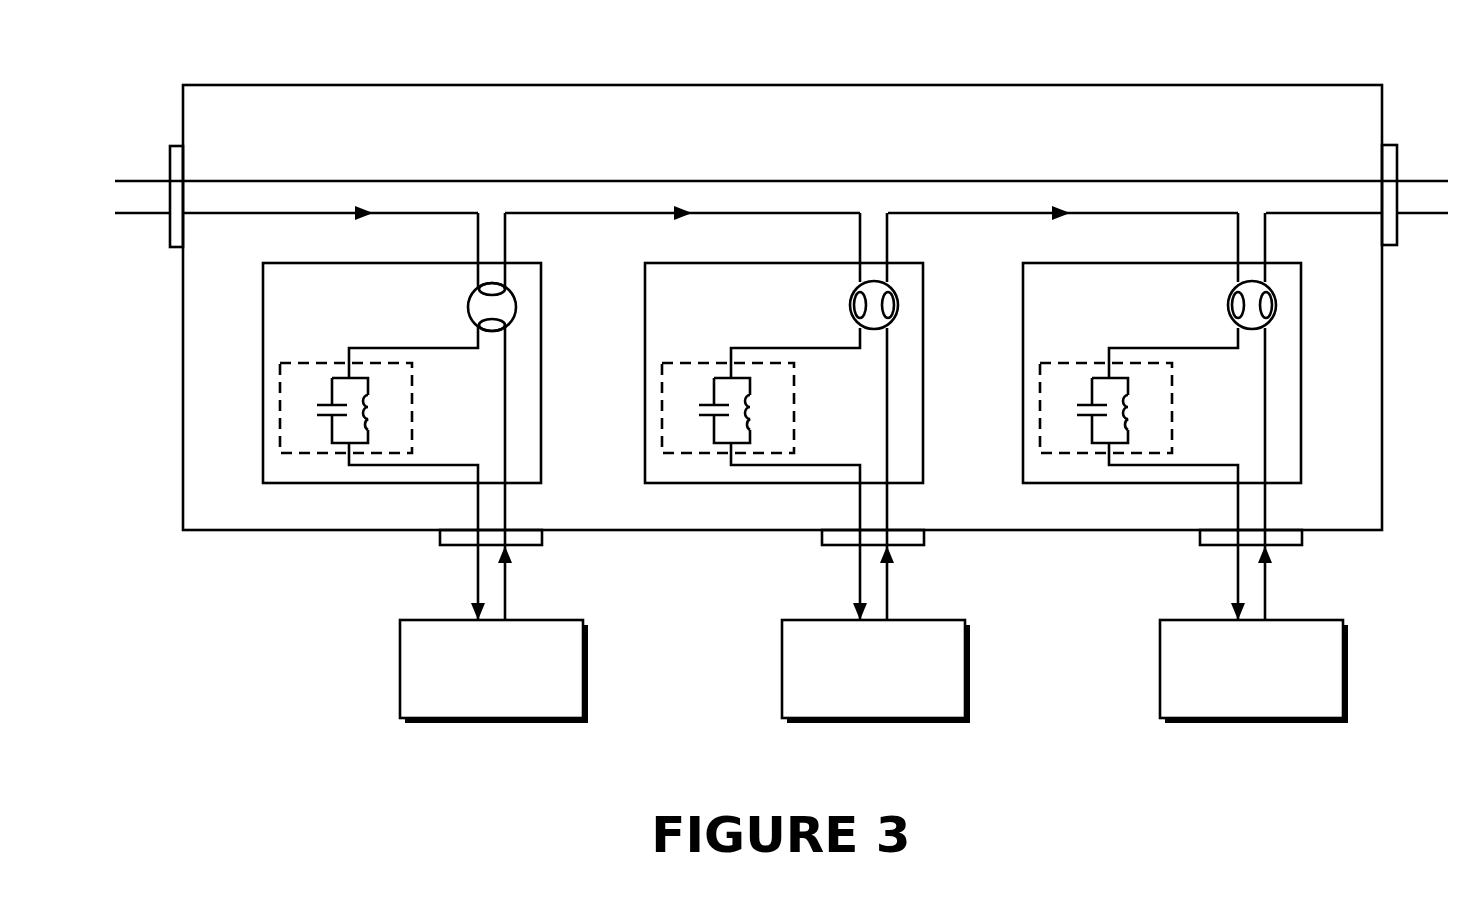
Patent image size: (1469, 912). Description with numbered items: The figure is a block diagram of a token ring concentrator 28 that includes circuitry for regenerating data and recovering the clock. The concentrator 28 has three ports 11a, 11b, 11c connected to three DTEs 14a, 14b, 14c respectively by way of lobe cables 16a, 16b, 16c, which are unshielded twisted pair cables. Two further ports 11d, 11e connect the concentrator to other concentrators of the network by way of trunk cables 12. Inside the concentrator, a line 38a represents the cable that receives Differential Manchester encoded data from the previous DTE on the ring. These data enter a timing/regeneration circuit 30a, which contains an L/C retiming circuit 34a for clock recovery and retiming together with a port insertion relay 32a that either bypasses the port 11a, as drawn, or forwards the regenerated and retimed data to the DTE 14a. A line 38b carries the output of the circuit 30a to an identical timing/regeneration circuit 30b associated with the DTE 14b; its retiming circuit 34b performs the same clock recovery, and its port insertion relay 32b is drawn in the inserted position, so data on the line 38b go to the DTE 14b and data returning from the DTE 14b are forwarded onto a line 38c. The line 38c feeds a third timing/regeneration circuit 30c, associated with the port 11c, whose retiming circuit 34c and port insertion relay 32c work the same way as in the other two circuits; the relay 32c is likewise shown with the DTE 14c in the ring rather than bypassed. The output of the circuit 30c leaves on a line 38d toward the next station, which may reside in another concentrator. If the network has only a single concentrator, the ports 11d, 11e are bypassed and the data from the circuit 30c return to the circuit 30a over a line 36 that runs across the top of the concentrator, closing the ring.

The concentrator 28 is at (1103, 85).
The line 36 is at (422, 181).
The trunk cables 12 is at (160, 181).
The port 11d is at (172, 248).
The port 11e is at (1393, 245).
The line 38a is at (267, 213).
The line 38b is at (617, 213).
The line 38c is at (990, 213).
The line 38d is at (1313, 213).
The timing/regeneration circuit 30a is at (263, 400).
The timing/regeneration circuit 30b is at (645, 378).
The timing/regeneration circuit 30c is at (1023, 355).
The port insertion relay 32a is at (467, 307).
The port insertion relay 32b is at (850, 305).
The port insertion relay 32c is at (1228, 305).
The retiming circuit 34a is at (300, 362).
The retiming circuit 34b is at (682, 362).
The retiming circuit 34c is at (1062, 362).
The port 11a is at (540, 548).
The port 11b is at (922, 548).
The port 11c is at (1300, 548).
The lobe cable 16a is at (478, 558).
The lobe cable 16b is at (860, 558).
The lobe cable 16c is at (1238, 558).
The DTE 14a is at (417, 722).
The DTE 14b is at (799, 722).
The DTE 14c is at (1177, 722).